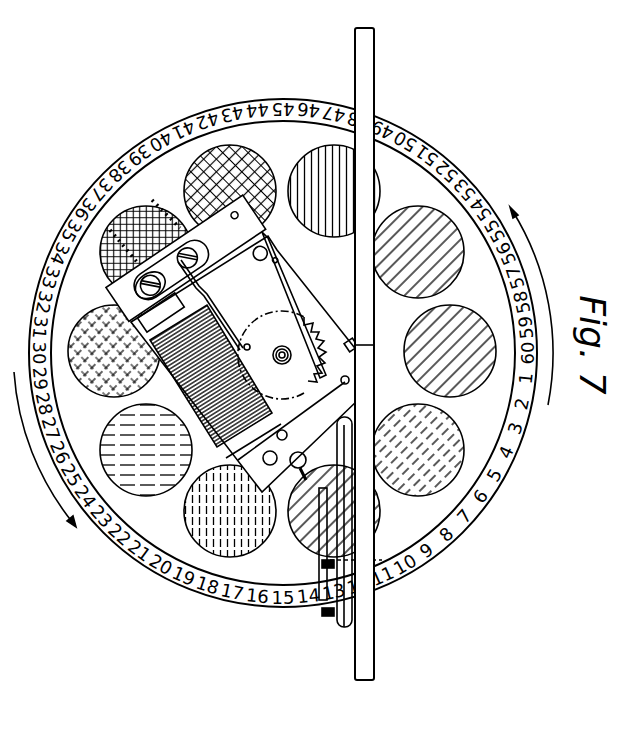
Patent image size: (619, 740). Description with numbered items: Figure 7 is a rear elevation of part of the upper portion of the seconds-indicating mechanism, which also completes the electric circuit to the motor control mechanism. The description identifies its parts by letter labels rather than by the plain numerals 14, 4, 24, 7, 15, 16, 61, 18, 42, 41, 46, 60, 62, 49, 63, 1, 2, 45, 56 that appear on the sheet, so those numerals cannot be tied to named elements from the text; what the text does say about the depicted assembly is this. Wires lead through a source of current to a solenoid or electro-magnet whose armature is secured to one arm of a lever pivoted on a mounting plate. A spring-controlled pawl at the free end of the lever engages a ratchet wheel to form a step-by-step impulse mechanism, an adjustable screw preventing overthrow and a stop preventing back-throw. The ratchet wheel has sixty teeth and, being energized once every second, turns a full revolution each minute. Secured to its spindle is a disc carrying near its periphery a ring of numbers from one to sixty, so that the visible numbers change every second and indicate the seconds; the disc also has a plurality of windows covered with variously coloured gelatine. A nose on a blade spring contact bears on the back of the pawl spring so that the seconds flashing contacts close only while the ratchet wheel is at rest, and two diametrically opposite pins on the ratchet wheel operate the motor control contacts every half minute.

The dial ring 14 is at (462, 185).
The dial plate 4 is at (402, 180).
The hatched disc 24 is at (447, 440).
The hatched disc 7 is at (386, 482).
The housing 15 is at (205, 455).
The coil 16 is at (193, 420).
The roller 61 is at (264, 498).
The roller pin 18 is at (294, 520).
The tab 42 is at (188, 324).
The rod 41 is at (210, 305).
The pin 46 is at (259, 254).
The ratchet wheel 60 is at (282, 355).
The lever arm 62 is at (257, 340).
The pivot block 49 is at (350, 340).
The ratchet chain 63 is at (108, 230).
The clamp post 1 is at (343, 445).
The spring strip 2 is at (350, 440).
The bar 45 is at (374, 335).
The bar bracket 56 is at (374, 372).